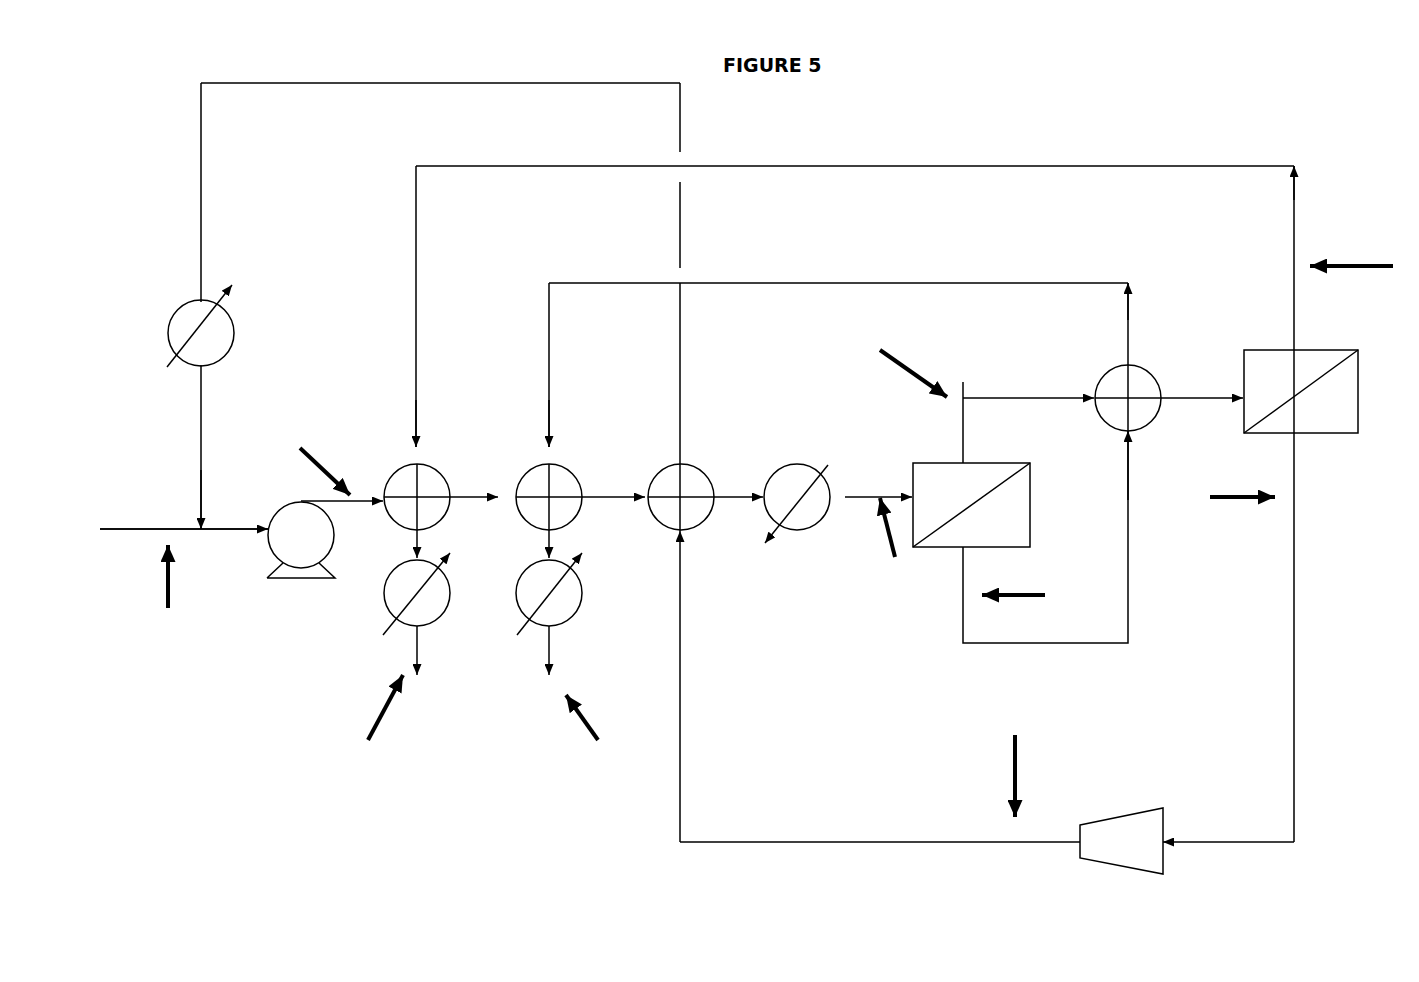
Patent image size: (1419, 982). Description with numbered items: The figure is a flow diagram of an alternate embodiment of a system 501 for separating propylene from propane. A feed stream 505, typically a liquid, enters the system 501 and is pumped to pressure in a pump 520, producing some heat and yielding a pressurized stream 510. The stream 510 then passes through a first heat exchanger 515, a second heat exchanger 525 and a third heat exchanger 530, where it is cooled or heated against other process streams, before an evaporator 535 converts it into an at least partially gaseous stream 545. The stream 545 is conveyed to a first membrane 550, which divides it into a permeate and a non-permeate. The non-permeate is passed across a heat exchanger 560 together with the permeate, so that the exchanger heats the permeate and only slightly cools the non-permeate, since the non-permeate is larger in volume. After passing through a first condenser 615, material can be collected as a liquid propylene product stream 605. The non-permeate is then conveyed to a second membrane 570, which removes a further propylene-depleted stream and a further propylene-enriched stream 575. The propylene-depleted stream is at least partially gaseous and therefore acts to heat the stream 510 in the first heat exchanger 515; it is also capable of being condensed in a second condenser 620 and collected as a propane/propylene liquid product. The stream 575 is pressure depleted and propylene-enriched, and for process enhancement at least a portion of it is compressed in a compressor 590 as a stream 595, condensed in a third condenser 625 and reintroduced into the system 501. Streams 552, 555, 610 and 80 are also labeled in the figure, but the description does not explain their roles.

The system 501 is at (367, 250).
The feed stream 505 is at (168, 593).
The stream 510 is at (315, 458).
The first heat exchanger 515 is at (433, 495).
The pump 520 is at (301, 542).
The second heat exchanger 525 is at (565, 510).
The third heat exchanger 530 is at (681, 497).
The evaporator 535 is at (797, 497).
The at least partially gaseous stream 545 is at (906, 544).
The first membrane 550 is at (962, 510).
The overhead stream 552 is at (895, 359).
The recycle stream 555 is at (1041, 596).
The heat exchanger 560 is at (1110, 383).
The second membrane 570 is at (1295, 398).
The further propylene-enriched stream 575 is at (1225, 498).
The compressor 590 is at (1113, 818).
The compressed stream 595 is at (1013, 764).
The liquid propylene product stream 605 is at (602, 723).
The outlet stream 610 is at (367, 713).
The first condenser 615 is at (565, 595).
The second condenser 620 is at (402, 582).
The third condenser 625 is at (183, 350).
The inlet stream 80 is at (1363, 281).